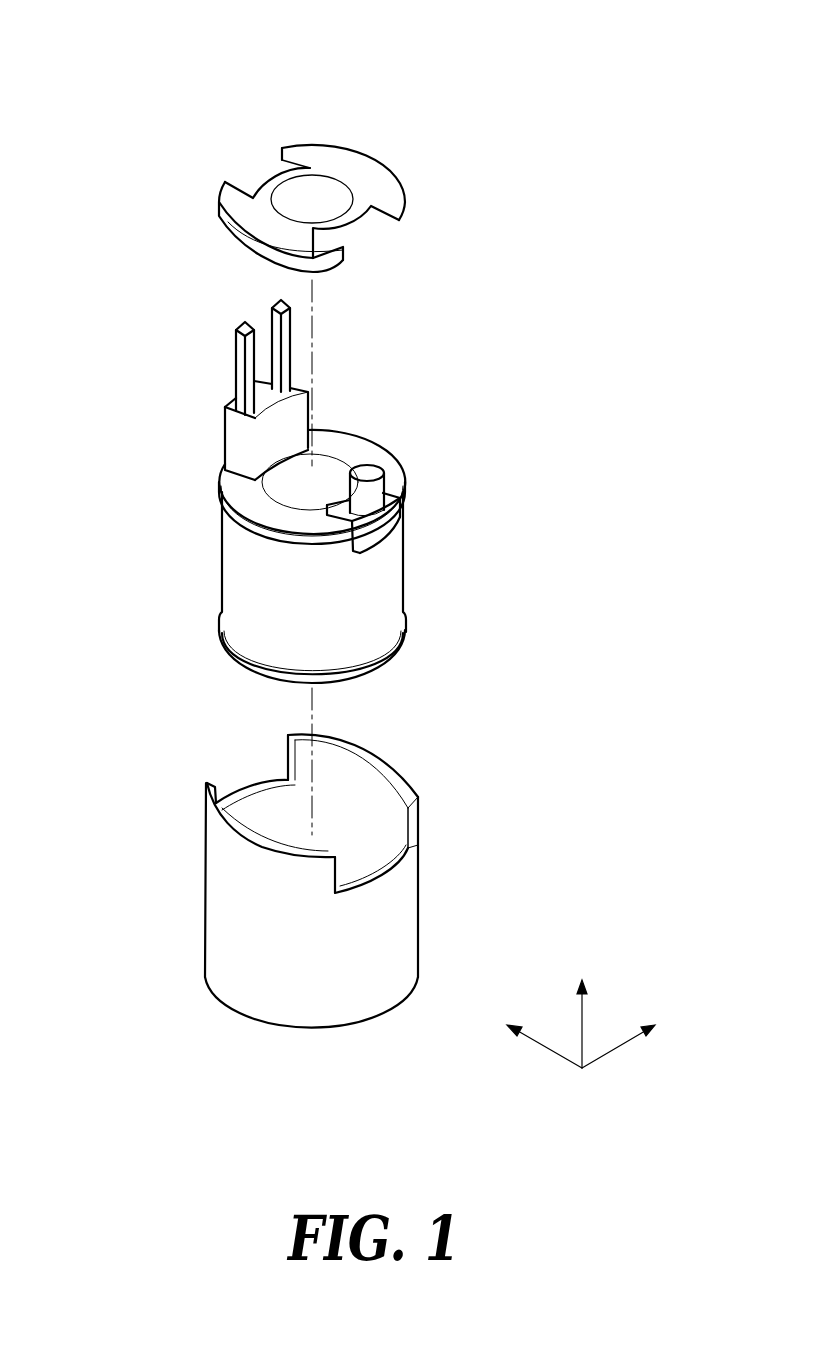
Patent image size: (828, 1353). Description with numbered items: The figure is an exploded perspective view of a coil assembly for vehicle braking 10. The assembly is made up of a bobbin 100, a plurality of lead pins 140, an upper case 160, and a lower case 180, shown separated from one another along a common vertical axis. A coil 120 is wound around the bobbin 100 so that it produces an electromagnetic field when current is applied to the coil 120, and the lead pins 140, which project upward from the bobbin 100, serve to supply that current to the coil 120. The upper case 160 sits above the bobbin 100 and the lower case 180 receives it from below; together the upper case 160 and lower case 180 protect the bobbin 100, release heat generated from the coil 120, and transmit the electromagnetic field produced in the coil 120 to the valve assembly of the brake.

The coil assembly for vehicle braking 10 is at (98, 69).
The bobbin 100 is at (360, 448).
The coil 120 is at (394, 565).
The lead pins 140 is at (238, 358).
The upper case 160 is at (367, 162).
The lower case 180 is at (412, 902).